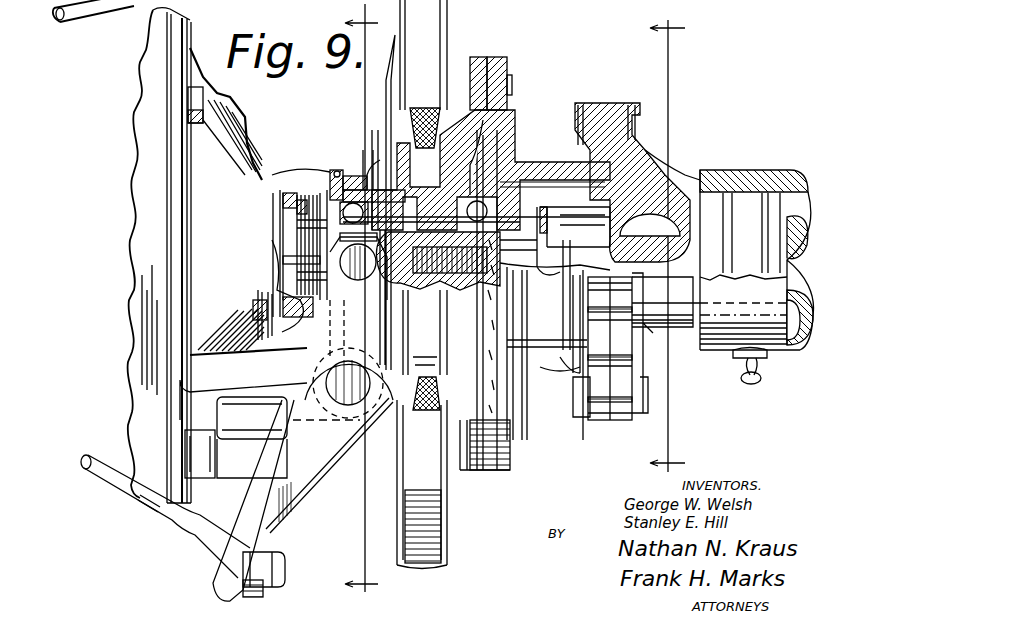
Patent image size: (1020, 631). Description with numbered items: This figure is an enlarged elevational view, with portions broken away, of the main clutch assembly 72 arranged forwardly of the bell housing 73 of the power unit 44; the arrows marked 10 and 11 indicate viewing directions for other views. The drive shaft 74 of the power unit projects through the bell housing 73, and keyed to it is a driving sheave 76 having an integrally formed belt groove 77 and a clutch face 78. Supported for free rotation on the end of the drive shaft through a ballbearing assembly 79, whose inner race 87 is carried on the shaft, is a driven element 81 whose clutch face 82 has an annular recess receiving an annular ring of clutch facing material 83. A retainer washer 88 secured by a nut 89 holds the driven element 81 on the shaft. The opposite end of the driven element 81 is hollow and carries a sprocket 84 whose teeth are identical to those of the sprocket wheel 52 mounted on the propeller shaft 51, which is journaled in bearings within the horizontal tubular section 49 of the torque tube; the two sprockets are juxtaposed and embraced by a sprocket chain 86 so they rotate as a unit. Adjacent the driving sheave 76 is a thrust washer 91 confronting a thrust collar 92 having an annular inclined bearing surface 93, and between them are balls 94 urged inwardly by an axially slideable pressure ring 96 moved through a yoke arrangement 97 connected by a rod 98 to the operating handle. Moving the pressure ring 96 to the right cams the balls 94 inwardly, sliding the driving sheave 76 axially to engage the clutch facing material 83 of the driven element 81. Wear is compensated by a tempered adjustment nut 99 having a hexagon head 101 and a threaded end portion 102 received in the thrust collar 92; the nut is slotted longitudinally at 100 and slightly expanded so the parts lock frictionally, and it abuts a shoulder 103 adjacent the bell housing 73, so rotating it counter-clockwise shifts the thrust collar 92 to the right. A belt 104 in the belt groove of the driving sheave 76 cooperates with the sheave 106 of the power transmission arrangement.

The power unit 44 is at (122, 163).
The section line 10 is at (378, 300).
The section line 11 is at (682, 240).
The horizontal tubular section 49 is at (785, 350).
The propeller shaft 51 is at (708, 198).
The sprocket wheel 52 is at (742, 241).
The main clutch assembly 72 is at (491, 119).
The bell housing 73 is at (228, 184).
The drive shaft 74 is at (352, 190).
The driving sheave 76 is at (462, 472).
The belt groove 77 is at (400, 140).
The clutch face 78 is at (475, 58).
The ballbearing assembly 79 is at (508, 162).
The driven element 81 is at (548, 360).
The clutch face 82 is at (492, 58).
The clutch facing material 83 is at (508, 108).
The sprocket 84 is at (595, 103).
The sprocket chain 86 is at (645, 150).
The inner race 87 is at (500, 203).
The retainer washer 88 is at (500, 228).
The nut 89 is at (512, 262).
The thrust washer 91 is at (357, 176).
The thrust collar 92 is at (305, 170).
The inclined bearing surface 93 is at (325, 160).
The balls 94 is at (283, 193).
The pressure ring 96 is at (330, 184).
The yoke arrangement 97 is at (307, 353).
The rod 98 is at (150, 512).
The adjustment nut 99 is at (263, 338).
The slot 100 is at (283, 260).
The hexagon head 101 is at (300, 224).
The threaded end portion 102 is at (300, 275).
The shoulder 103 is at (297, 206).
The belt 104 is at (400, 492).
The sheave 106 is at (447, 545).